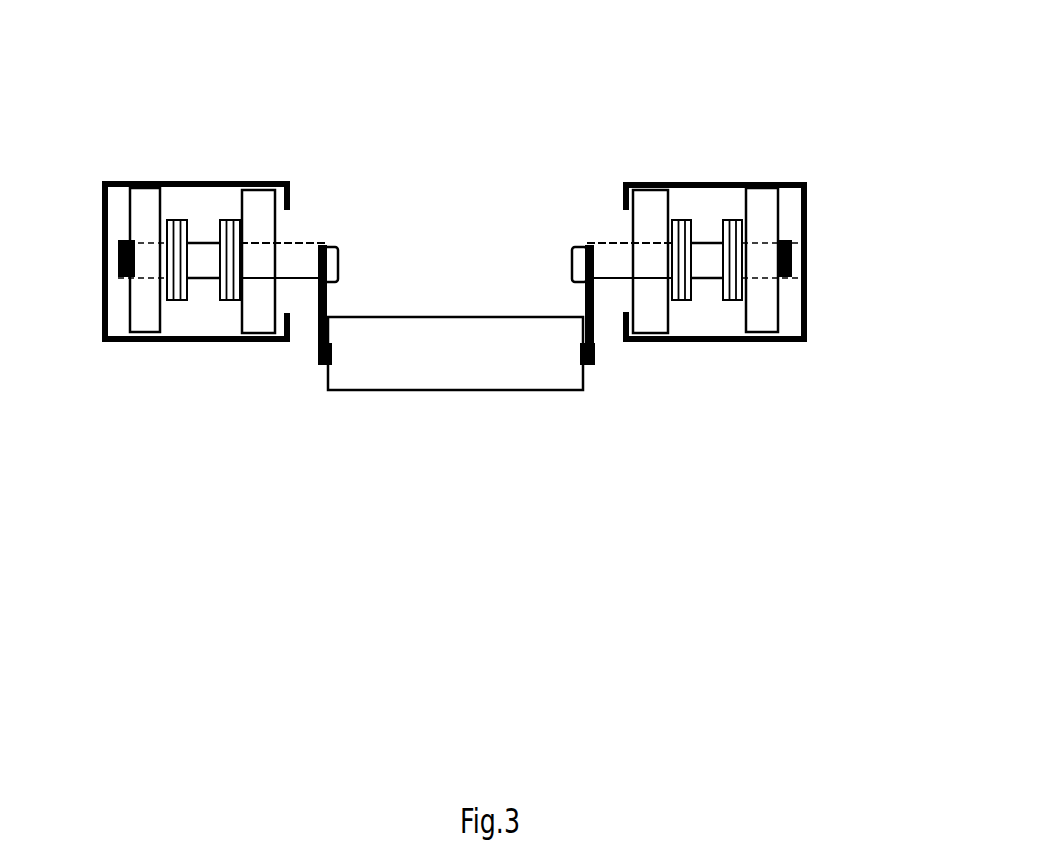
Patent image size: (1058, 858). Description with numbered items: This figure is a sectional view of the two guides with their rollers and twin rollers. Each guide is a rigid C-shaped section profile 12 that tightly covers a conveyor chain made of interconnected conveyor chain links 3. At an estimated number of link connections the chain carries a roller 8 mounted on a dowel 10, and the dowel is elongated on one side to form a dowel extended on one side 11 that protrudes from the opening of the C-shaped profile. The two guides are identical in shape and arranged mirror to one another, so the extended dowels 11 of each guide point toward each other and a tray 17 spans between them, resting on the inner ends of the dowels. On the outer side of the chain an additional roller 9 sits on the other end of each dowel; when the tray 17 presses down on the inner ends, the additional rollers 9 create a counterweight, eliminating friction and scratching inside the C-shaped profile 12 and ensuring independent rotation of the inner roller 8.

The conveyor chain links 3 is at (670, 245).
The roller 8 is at (652, 212).
The additional roller 9 is at (772, 318).
The dowel 10 is at (708, 260).
The dowel extended on one side 11 is at (297, 265).
The C-shaped section profile 12 is at (197, 182).
The tray 17 is at (467, 347).